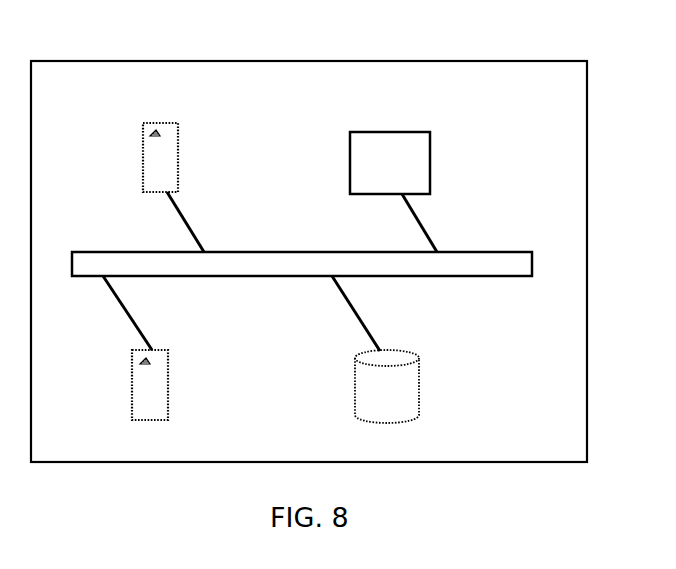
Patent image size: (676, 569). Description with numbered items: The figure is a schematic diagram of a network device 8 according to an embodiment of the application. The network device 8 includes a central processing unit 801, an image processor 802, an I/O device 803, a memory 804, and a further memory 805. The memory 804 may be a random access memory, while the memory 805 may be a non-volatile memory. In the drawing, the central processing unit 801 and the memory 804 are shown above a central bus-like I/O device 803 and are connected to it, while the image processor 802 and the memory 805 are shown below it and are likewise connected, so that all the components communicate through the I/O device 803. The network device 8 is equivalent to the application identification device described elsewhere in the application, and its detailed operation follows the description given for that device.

The network device 8 is at (493, 61).
The central processing unit 801 is at (165, 123).
The image processor 802 is at (178, 341).
The I/O device 803 is at (493, 252).
The memory 804 is at (408, 132).
The memory 805 is at (418, 341).